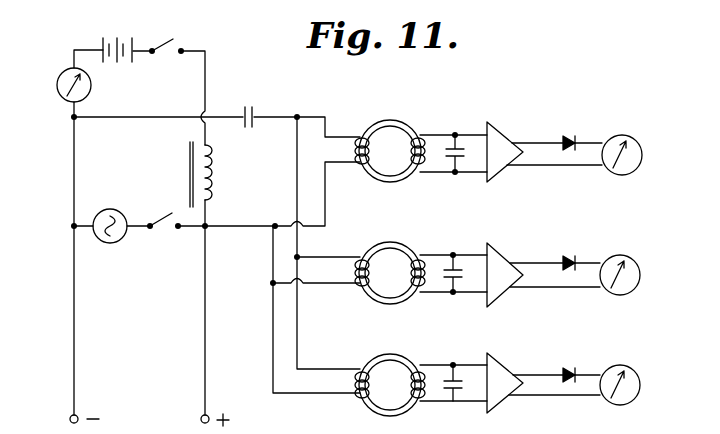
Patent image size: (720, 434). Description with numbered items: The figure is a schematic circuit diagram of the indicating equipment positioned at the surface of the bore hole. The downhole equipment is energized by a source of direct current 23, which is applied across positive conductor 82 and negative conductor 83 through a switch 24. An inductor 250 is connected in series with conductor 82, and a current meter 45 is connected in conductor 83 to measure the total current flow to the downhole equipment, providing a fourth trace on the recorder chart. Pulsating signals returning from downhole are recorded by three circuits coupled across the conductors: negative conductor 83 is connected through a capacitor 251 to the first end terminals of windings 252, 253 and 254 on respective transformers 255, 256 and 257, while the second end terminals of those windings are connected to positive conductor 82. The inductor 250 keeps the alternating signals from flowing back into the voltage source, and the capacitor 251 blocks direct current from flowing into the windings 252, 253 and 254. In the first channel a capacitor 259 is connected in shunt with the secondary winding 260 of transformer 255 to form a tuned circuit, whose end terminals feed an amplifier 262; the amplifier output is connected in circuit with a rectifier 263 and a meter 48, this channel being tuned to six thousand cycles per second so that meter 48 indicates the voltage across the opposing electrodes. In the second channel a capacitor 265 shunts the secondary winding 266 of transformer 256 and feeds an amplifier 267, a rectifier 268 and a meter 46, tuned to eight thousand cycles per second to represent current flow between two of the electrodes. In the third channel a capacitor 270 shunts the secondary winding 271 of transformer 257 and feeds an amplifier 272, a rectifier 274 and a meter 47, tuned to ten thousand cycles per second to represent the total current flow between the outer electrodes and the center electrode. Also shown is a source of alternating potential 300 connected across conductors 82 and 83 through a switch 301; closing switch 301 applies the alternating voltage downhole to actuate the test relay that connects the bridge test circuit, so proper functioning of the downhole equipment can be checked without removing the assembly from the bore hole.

The source of direct current 23 is at (103, 44).
The switch 24 is at (164, 42).
The current meter 45 is at (57, 85).
The negative conductor 83 is at (73, 331).
The positive conductor 82 is at (204, 334).
The source of alternating potential 300 is at (118, 182).
The switch 301 is at (160, 231).
The inductor 250 is at (214, 176).
The capacitor 251 is at (256, 111).
The winding 252 is at (362, 138).
The transformer 255 is at (371, 188).
The secondary winding 260 is at (427, 147).
The capacitor 259 is at (457, 176).
The amplifier 262 is at (502, 128).
The rectifier 263 is at (574, 138).
The meter 48 is at (641, 151).
The winding 253 is at (358, 262).
The transformer 256 is at (367, 304).
The secondary winding 266 is at (424, 264).
The capacitor 265 is at (448, 283).
The amplifier 267 is at (497, 250).
The rectifier 268 is at (571, 258).
The meter 46 is at (640, 273).
The winding 254 is at (357, 375).
The transformer 257 is at (366, 413).
The secondary winding 271 is at (425, 393).
The capacitor 270 is at (458, 400).
The amplifier 272 is at (497, 362).
The rectifier 274 is at (574, 370).
The meter 47 is at (640, 373).